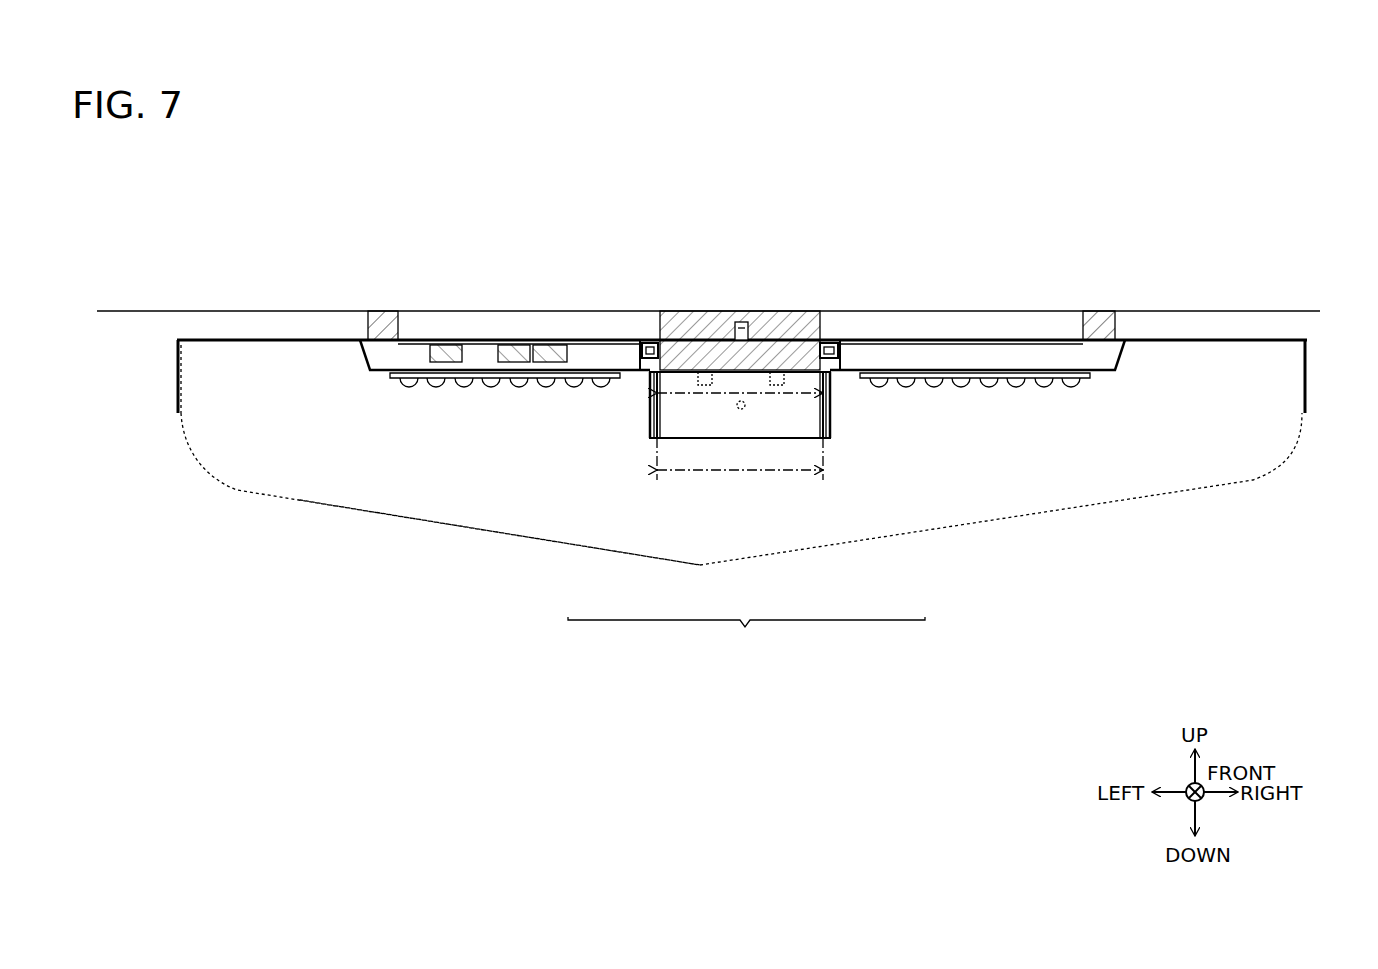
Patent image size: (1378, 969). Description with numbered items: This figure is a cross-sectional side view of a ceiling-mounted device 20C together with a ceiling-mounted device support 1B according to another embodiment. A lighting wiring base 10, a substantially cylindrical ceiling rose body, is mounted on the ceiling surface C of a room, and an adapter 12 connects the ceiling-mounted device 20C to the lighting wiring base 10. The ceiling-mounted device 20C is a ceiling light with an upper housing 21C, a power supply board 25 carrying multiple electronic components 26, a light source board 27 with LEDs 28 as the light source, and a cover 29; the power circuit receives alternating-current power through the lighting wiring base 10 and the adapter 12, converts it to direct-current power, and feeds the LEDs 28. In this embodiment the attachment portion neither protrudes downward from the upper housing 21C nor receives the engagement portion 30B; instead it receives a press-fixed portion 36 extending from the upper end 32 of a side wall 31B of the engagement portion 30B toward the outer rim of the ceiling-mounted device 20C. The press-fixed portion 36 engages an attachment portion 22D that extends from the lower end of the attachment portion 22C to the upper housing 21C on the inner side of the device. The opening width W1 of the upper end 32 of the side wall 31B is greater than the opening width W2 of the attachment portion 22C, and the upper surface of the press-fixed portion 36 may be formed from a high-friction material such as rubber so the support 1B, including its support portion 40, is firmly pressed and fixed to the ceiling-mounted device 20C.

The ceiling surface C is at (1186, 310).
The ceiling-mounted device support 1B is at (766, 710).
The ceiling-mounted device 20C is at (325, 730).
The upper housing 21C is at (950, 340).
The attachment portion 22C is at (668, 350).
The attachment portion 22D is at (620, 350).
The power supply board 25 is at (455, 342).
The electronic component 26 is at (515, 345).
The light source board 27 is at (520, 388).
The LED 28 is at (430, 388).
The cover 29 is at (535, 555).
The engagement portion 30B is at (746, 639).
The side wall 31B is at (660, 372).
The upper end 32 is at (655, 372).
The press-fixed portion 36 is at (648, 372).
The support portion 40 is at (741, 410).
The lighting wiring base 10 is at (722, 320).
The adapter 12 is at (764, 345).
The opening width W1 is at (740, 408).
The opening width W2 is at (740, 471).